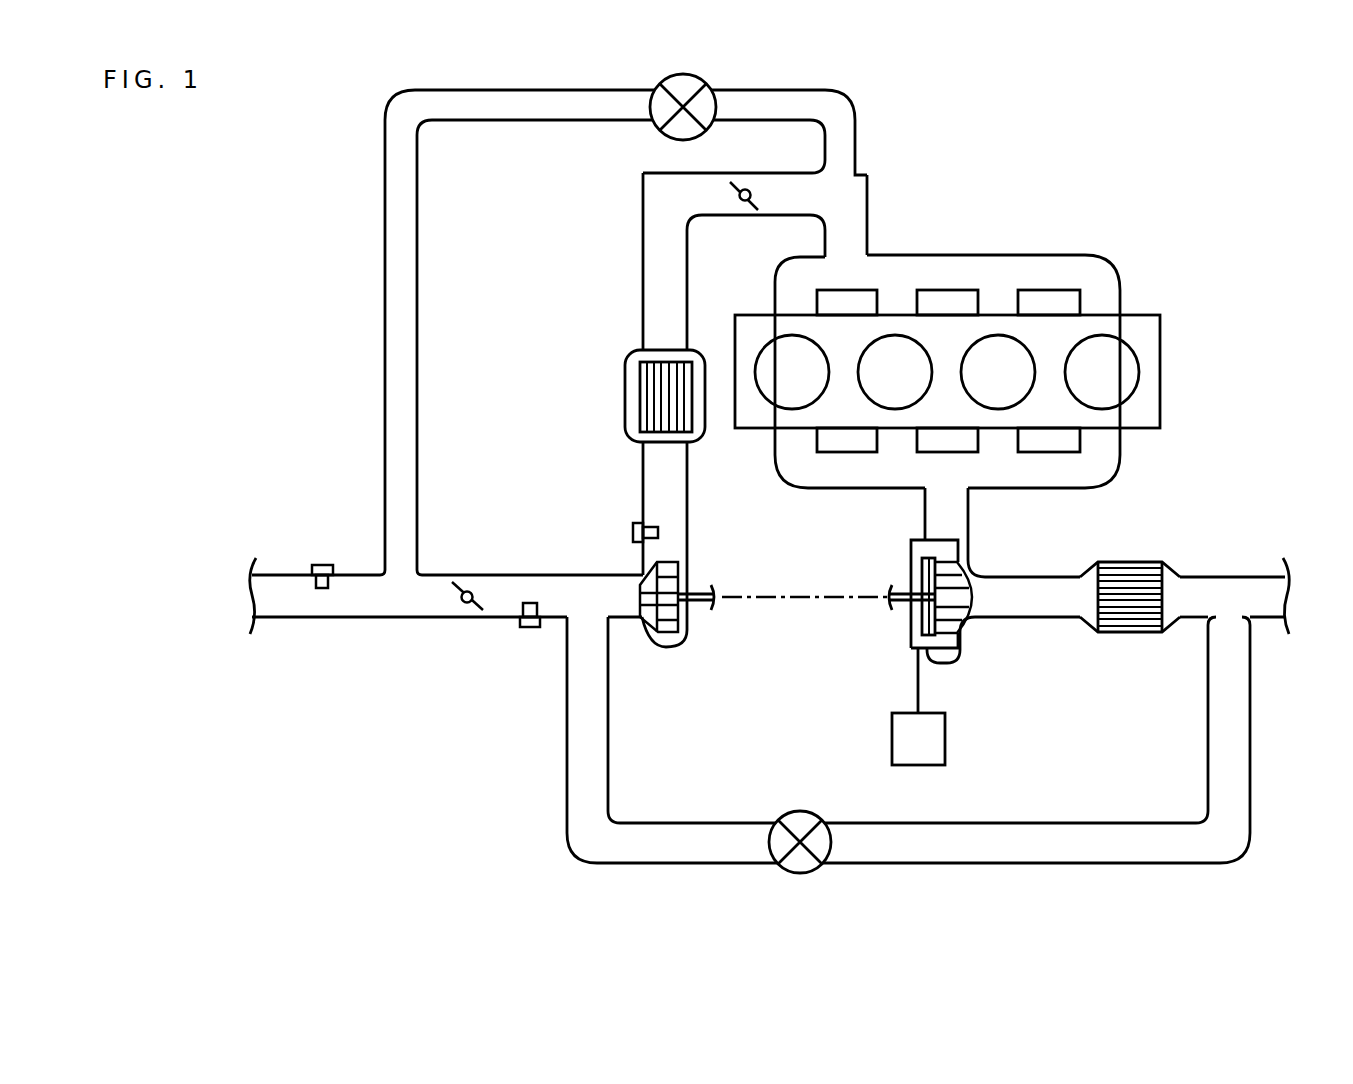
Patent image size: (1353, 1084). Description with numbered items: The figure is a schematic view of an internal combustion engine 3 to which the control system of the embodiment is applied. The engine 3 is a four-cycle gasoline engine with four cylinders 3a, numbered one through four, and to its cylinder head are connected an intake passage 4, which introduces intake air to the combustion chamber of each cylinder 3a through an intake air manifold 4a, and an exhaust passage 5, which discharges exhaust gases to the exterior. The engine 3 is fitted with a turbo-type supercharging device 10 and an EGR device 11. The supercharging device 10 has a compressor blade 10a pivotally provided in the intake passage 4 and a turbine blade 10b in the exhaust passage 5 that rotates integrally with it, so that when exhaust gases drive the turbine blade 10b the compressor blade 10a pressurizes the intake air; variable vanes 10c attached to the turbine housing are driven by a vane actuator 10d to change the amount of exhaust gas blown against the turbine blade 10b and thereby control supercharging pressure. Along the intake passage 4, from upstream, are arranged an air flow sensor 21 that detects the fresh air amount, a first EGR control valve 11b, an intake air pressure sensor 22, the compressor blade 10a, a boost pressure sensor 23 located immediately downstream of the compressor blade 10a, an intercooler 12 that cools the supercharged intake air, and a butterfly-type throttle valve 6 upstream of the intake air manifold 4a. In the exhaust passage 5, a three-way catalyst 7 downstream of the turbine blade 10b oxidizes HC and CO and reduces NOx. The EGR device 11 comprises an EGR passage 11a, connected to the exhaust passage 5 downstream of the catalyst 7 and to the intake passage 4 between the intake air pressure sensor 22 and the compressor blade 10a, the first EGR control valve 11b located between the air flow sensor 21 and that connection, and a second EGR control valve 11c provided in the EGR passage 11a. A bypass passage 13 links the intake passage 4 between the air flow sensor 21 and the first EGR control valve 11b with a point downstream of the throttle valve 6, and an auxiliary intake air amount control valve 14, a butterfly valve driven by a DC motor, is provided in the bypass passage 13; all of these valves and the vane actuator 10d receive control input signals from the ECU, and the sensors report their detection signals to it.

The internal combustion engine 3 is at (987, 402).
The cylinder 3a is at (762, 388).
The intake passage 4 is at (687, 280).
The intake air manifold 4a is at (1122, 298).
The exhaust passage 5 is at (1030, 576).
The throttle valve 6 is at (745, 189).
The catalyst 7 is at (1128, 634).
The supercharging device 10 is at (712, 644).
The compressor blade 10a is at (630, 597).
The turbine blade 10b is at (975, 600).
The variable vane 10c is at (912, 550).
The vane actuator 10d is at (892, 735).
The EGR device 11 is at (948, 781).
The EGR passage 11a is at (1252, 742).
The first EGR control valve 11b is at (458, 582).
The second EGR control valve 11c is at (800, 875).
The intercooler 12 is at (625, 388).
The bypass passage 13 is at (417, 270).
The auxiliary intake air amount control valve 14 is at (695, 76).
The air flow sensor 21 is at (318, 563).
The intake air pressure sensor 22 is at (530, 630).
The boost pressure sensor 23 is at (633, 532).